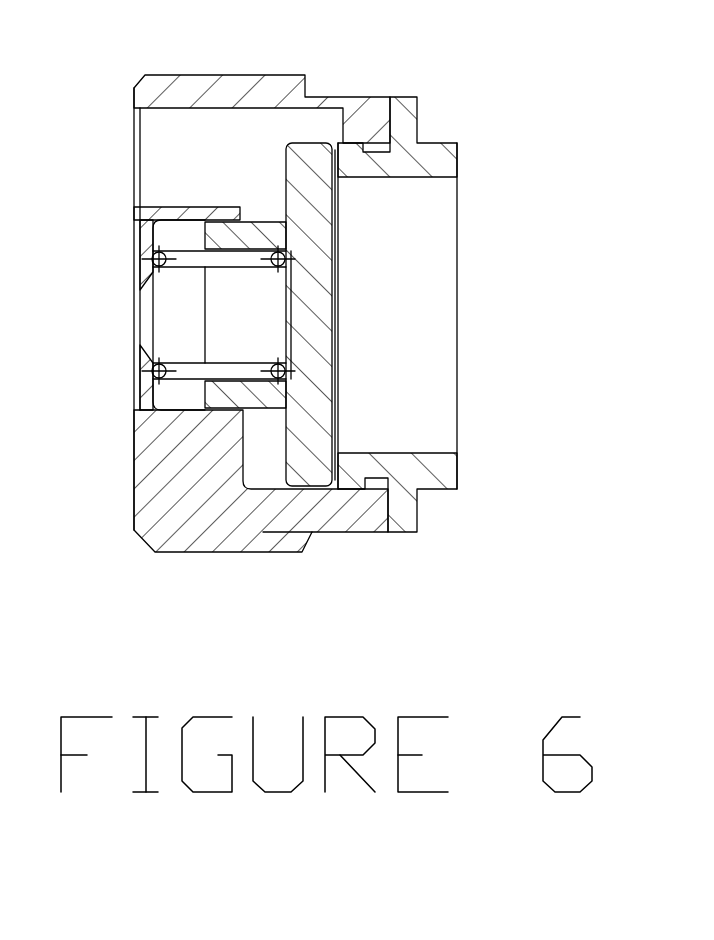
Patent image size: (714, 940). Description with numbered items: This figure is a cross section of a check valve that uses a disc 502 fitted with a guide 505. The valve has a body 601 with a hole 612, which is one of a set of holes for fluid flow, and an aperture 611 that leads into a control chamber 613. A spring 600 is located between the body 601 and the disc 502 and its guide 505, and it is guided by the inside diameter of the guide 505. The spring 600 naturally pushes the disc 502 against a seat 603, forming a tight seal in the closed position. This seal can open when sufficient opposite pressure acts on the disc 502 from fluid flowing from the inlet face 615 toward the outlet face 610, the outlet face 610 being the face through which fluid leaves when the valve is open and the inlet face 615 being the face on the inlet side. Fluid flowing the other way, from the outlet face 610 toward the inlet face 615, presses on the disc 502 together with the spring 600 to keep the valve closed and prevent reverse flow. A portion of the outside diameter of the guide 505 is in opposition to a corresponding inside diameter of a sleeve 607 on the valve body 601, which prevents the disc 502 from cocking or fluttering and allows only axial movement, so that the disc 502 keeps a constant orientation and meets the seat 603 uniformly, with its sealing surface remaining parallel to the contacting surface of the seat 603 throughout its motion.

The disc 502 is at (305, 382).
The guide 505 is at (272, 228).
The spring 600 is at (150, 377).
The body 601 is at (163, 80).
The seat 603 is at (350, 168).
The sleeve 607 is at (220, 208).
The outlet face 610 is at (133, 455).
The aperture 611 is at (137, 318).
The hole 612 is at (157, 183).
The control chamber 613 is at (187, 312).
The inlet face 615 is at (457, 162).